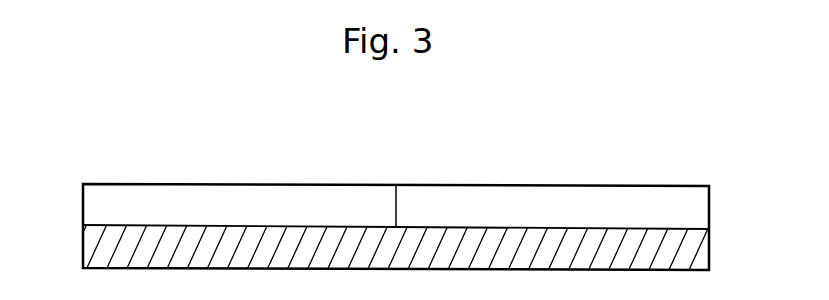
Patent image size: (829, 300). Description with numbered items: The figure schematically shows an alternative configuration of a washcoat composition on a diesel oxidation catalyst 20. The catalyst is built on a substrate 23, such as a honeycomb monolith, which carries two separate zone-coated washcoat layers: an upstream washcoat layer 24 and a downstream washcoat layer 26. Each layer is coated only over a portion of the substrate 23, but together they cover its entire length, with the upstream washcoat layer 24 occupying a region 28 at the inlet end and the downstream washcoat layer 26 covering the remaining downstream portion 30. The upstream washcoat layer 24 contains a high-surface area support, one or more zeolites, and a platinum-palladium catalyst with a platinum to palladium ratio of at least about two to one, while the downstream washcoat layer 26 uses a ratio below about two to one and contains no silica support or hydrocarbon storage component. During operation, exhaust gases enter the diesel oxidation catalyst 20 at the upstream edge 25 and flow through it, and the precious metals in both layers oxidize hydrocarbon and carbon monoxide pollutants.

The diesel oxidation catalyst 20 is at (112, 127).
The substrate 23 is at (88, 233).
The upstream washcoat layer 24 is at (92, 202).
The upstream edge 25 is at (712, 229).
The downstream washcoat layer 26 is at (702, 203).
The first region 28 is at (393, 171).
The downstream portion 30 is at (707, 173).